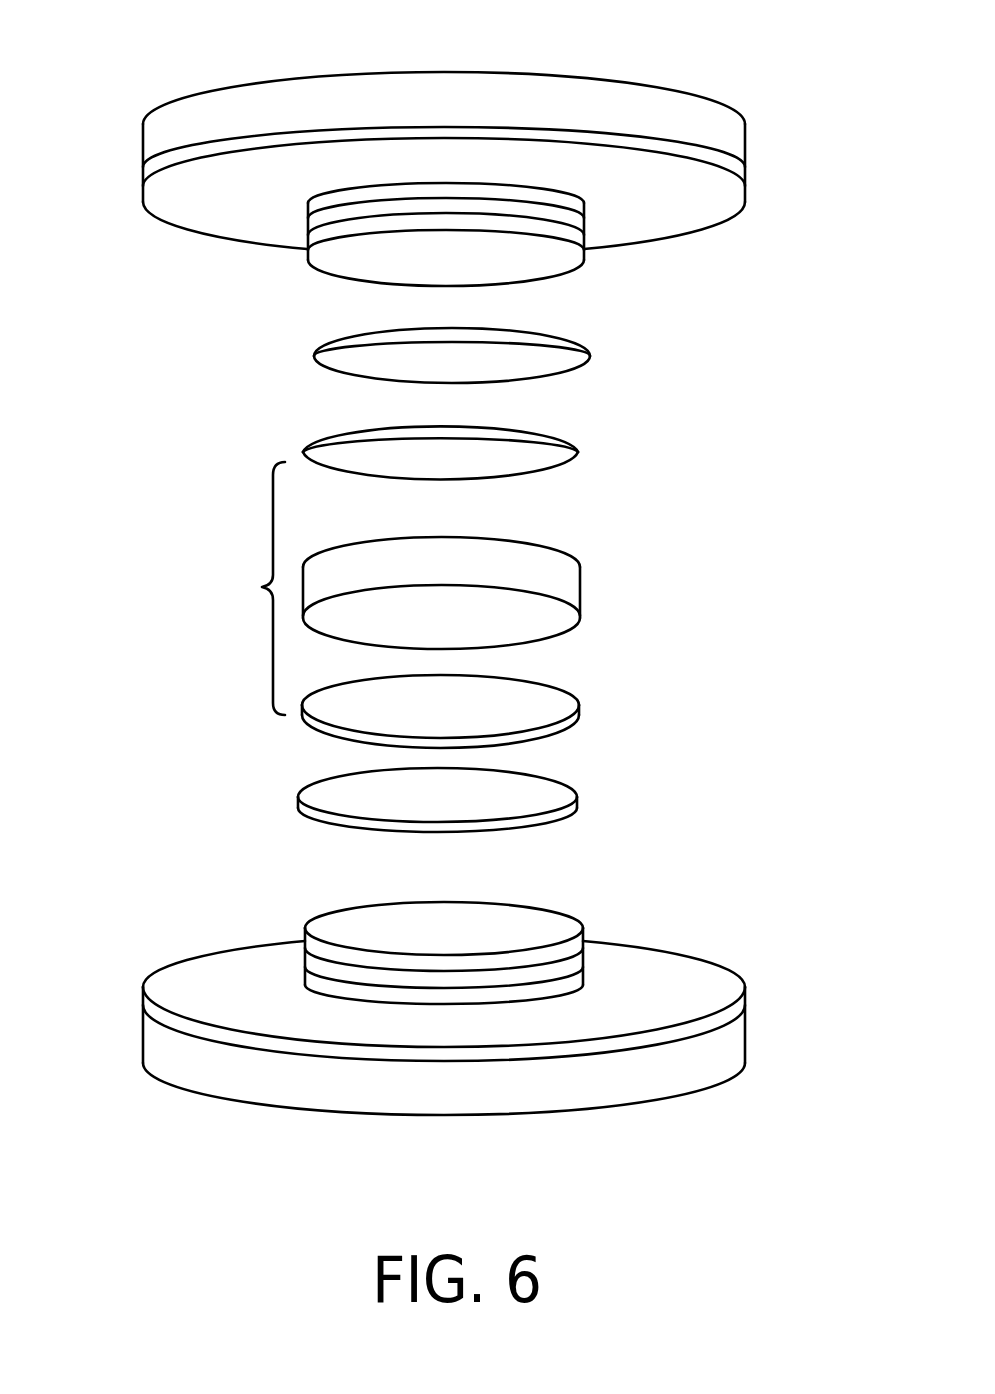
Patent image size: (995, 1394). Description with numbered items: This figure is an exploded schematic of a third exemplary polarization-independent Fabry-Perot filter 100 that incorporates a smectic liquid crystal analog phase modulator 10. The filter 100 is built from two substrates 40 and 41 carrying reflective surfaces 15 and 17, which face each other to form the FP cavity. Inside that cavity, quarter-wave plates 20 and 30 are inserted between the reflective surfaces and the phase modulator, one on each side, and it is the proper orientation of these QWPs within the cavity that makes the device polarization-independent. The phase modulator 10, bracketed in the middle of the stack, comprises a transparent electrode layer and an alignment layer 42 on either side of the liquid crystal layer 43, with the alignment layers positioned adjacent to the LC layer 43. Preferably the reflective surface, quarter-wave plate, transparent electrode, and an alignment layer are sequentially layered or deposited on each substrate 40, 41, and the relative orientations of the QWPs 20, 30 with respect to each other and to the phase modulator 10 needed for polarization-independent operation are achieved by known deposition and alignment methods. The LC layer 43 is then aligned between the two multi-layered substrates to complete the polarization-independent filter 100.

The polarization-independent FP filter 100 is at (97, 37).
The analog phase modulator 10 is at (207, 605).
The reflective surface 15 is at (586, 244).
The reflective surface 17 is at (586, 938).
The quarter-wave plate 20 is at (590, 355).
The quarter-wave plate 30 is at (578, 803).
The substrate 40 is at (740, 145).
The substrate 41 is at (577, 445).
The alignment layer 42 is at (576, 460).
The liquid crystal layer 43 is at (560, 636).